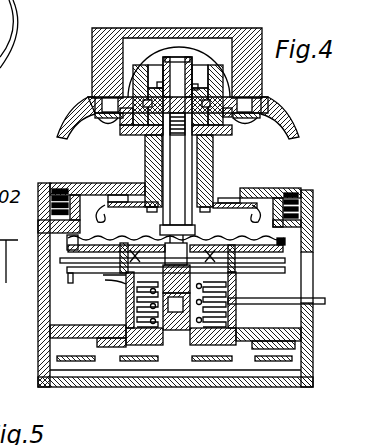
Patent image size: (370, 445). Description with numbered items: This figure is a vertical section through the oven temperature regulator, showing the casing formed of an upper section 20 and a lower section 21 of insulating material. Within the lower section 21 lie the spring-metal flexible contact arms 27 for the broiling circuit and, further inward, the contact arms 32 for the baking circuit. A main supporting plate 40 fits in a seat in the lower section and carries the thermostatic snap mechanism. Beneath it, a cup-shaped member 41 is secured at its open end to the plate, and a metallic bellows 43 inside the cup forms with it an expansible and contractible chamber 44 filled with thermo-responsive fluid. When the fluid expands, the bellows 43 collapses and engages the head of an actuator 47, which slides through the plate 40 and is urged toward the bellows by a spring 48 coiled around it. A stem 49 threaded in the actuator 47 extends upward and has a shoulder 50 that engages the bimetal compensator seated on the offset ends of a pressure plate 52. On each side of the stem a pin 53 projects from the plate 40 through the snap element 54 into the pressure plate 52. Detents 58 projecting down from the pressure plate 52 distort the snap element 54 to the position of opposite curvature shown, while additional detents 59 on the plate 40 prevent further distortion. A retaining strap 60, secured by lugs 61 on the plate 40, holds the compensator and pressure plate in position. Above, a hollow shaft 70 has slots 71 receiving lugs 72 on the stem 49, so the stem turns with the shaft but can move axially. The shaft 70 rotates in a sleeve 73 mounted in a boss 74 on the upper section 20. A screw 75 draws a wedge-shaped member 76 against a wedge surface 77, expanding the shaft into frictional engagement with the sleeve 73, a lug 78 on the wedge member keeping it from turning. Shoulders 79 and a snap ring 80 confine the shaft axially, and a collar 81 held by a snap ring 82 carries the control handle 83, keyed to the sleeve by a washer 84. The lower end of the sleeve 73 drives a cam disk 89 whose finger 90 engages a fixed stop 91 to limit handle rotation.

The upper section 20 is at (313, 200).
The lower section 21 is at (313, 328).
The flexible contact arm 27 is at (82, 361).
The contact arm 32 is at (133, 361).
The main supporting plate 40 is at (103, 288).
The cup-shaped member 41 is at (152, 343).
The metallic bellows 43 is at (228, 312).
The expansible and contractible chamber 44 is at (137, 315).
The actuator 47 is at (185, 330).
The spring 48 is at (137, 295).
The stem 49 is at (168, 343).
The shoulder 50 is at (178, 226).
The pressure plate 52 is at (285, 262).
The pin 53 is at (123, 240).
The snap element 54 is at (103, 256).
The detents 58 is at (140, 242).
The additional detents 59 is at (202, 240).
The retaining strap 60 is at (87, 236).
The lugs 61 is at (285, 272).
The hollow shaft 70 is at (192, 67).
The slots 71 is at (198, 163).
The lugs 72 is at (222, 168).
The sleeve 73 is at (162, 173).
The boss 74 is at (207, 177).
The screw 75 is at (173, 65).
The wedge-shaped member 76 is at (177, 162).
The wedge surface 77 is at (158, 140).
The lug 78 is at (176, 154).
The shoulders 79 is at (162, 85).
The snap ring 80 is at (162, 72).
The collar 81 is at (140, 115).
The snap ring 82 is at (220, 93).
The control handle 83 is at (97, 35).
The washer 84 is at (255, 140).
The cam disk 89 is at (105, 236).
The finger 90 is at (258, 212).
The fixed stop 91 is at (262, 205).